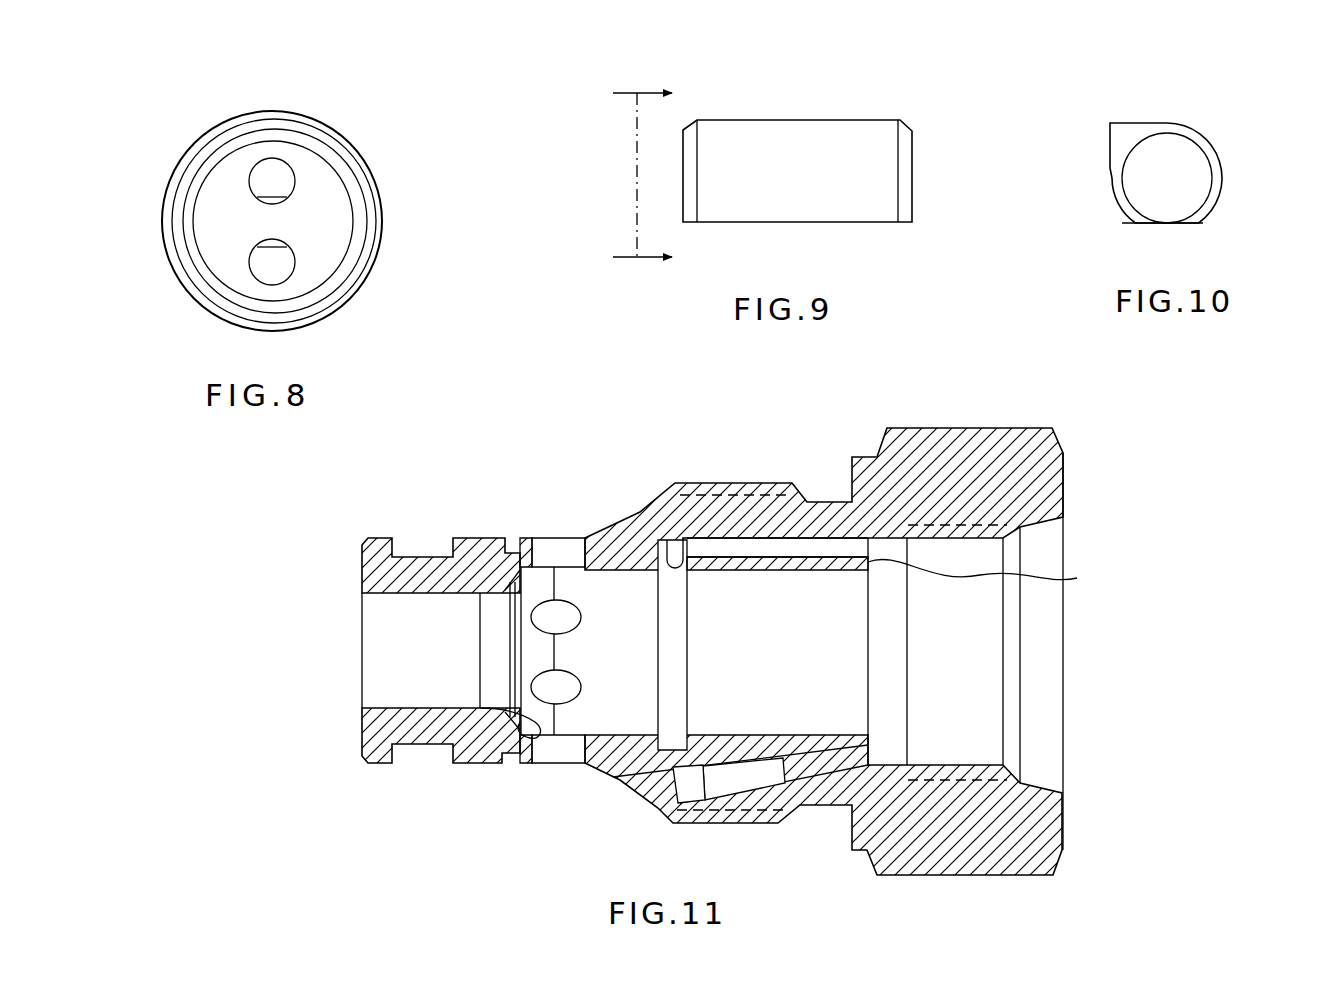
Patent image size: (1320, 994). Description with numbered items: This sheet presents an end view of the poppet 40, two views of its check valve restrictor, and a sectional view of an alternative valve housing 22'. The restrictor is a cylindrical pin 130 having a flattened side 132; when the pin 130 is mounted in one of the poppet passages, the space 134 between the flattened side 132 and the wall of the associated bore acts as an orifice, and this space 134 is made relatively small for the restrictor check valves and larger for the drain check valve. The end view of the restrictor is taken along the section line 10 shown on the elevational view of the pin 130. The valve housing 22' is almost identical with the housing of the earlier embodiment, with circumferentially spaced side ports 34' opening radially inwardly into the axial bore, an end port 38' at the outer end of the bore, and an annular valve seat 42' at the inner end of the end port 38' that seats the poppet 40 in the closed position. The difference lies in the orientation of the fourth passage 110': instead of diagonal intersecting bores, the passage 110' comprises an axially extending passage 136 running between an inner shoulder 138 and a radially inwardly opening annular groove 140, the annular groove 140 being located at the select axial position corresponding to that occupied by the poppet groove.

In FIG. 8, the poppet 40 is at (185, 152).
In FIG. 8, the cylindrical pin 130 is at (255, 182).
In FIG. 9, the cylindrical pin 130 is at (803, 146).
In FIG. 10, the cylindrical pin 130 is at (1205, 150).
In FIG. 8, the flattened side 132 is at (265, 200).
In FIG. 9, the flattened side 132 is at (727, 222).
In FIG. 10, the flattened side 132 is at (1177, 223).
In FIG. 8, the space 134 is at (297, 254).
In FIG. 9, the section line 10- 10 is at (626, 175).
In FIG. 11, the valve housing 22' is at (824, 618).
In FIG. 11, the side ports 34' is at (552, 581).
In FIG. 11, the end port 38' is at (387, 650).
In FIG. 11, the valve seat 42' is at (489, 760).
In FIG. 11, the fourth passage 110' is at (784, 465).
In FIG. 11, the axially extending passage 136 is at (733, 542).
In FIG. 11, the inner shoulder 138 is at (995, 576).
In FIG. 11, the annular groove 140 is at (673, 553).